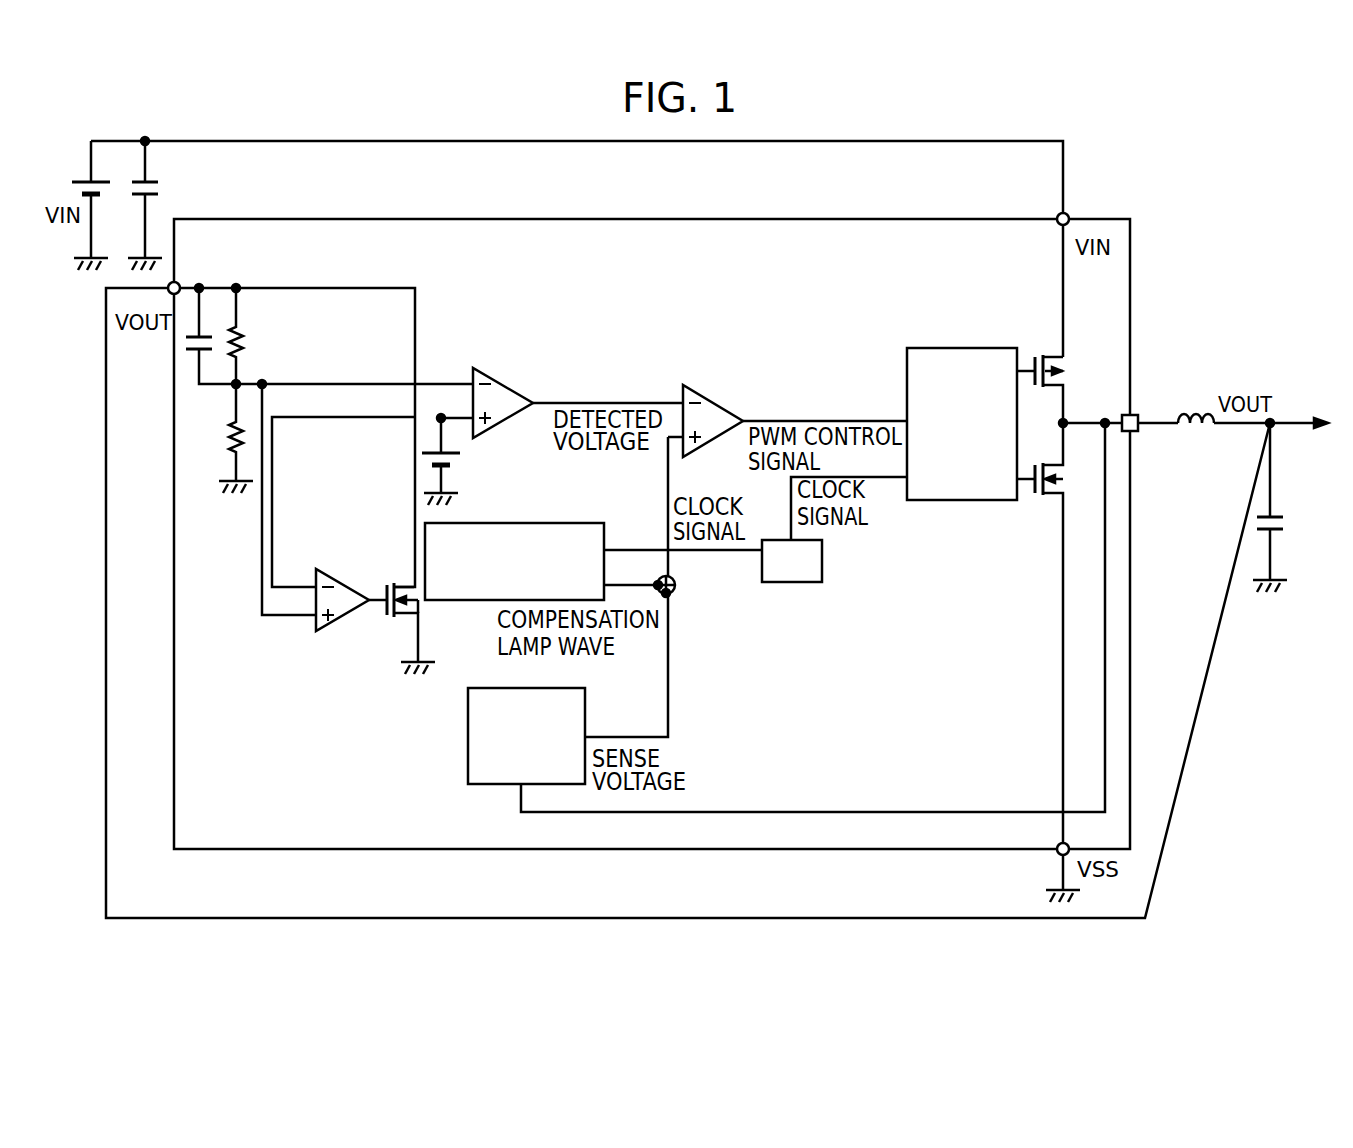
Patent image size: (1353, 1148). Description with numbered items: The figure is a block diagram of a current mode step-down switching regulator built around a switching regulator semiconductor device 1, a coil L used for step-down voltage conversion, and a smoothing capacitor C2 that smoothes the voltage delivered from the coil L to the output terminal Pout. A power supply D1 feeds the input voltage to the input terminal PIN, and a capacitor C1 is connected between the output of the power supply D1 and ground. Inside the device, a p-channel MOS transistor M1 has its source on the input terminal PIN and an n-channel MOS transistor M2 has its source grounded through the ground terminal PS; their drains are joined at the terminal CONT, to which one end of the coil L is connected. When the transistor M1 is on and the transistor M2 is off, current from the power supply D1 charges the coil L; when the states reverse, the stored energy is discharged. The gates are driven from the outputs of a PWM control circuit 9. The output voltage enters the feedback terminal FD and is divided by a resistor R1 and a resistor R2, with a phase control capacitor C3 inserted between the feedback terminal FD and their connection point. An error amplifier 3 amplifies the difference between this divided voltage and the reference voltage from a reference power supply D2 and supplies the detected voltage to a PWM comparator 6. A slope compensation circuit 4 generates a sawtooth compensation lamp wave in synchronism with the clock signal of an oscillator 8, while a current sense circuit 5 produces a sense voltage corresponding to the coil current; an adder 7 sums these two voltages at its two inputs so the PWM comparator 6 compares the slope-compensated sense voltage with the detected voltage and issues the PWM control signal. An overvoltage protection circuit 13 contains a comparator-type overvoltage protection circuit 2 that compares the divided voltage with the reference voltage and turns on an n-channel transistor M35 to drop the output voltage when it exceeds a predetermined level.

The current mode step-down switching regulator semiconductor device 1 is at (1131, 293).
The overvoltage protection circuit 2 is at (325, 632).
The error amplifier 3 is at (525, 412).
The slope compensation circuit 4 is at (585, 522).
The current sense circuit 5 is at (468, 736).
The PWM comparator 6 is at (703, 448).
The adder 7 is at (678, 580).
The oscillator 8 is at (824, 564).
The PWM control circuit 9 is at (940, 348).
The overvoltage protection circuit 13 is at (353, 552).
The p-channel MOS transistor M1 is at (1052, 356).
The n-channel MOS transistor M2 is at (1052, 500).
The n-channel transistor M35 is at (400, 618).
The capacitor C1 is at (162, 180).
The smoothing capacitor C2 is at (1272, 512).
The phase control capacitor C3 is at (196, 360).
The power supply D1 is at (82, 181).
The reference power supply D2 is at (450, 470).
The resistor R1 is at (252, 343).
The resistor R2 is at (228, 438).
The coil L is at (1190, 412).
The terminal FD is at (180, 284).
The terminal Pin PIN is at (1069, 217).
The terminal Ps PS is at (1062, 856).
The terminal CONT is at (1138, 414).
The output terminal Pout is at (1273, 418).